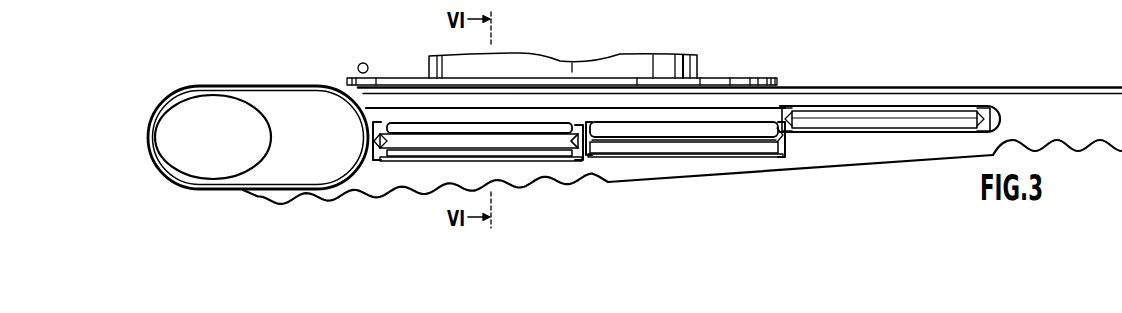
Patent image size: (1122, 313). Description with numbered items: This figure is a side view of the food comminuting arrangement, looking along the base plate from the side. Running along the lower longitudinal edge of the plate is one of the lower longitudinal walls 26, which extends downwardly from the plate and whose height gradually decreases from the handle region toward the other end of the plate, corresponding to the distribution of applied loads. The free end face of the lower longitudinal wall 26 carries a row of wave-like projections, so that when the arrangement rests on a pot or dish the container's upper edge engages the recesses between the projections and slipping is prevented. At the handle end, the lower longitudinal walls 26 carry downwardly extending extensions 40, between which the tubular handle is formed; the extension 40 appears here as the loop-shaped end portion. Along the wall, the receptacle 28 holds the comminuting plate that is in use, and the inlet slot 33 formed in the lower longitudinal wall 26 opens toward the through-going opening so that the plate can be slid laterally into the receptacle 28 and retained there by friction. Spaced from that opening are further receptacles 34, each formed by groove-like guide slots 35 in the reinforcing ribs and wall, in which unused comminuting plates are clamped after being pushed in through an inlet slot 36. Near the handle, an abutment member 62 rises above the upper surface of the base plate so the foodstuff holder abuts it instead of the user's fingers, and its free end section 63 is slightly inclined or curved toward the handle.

The extensions 40 is at (287, 113).
The free end section 63 is at (358, 64).
The abutment member 62 is at (368, 77).
The inlet slot 36 is at (410, 143).
The further receptacle 34 is at (658, 137).
The guide slots 35 is at (508, 133).
The receptacle 28 is at (837, 112).
The inlet slot 33 is at (875, 122).
The lower longitudinal walls 26 is at (748, 160).